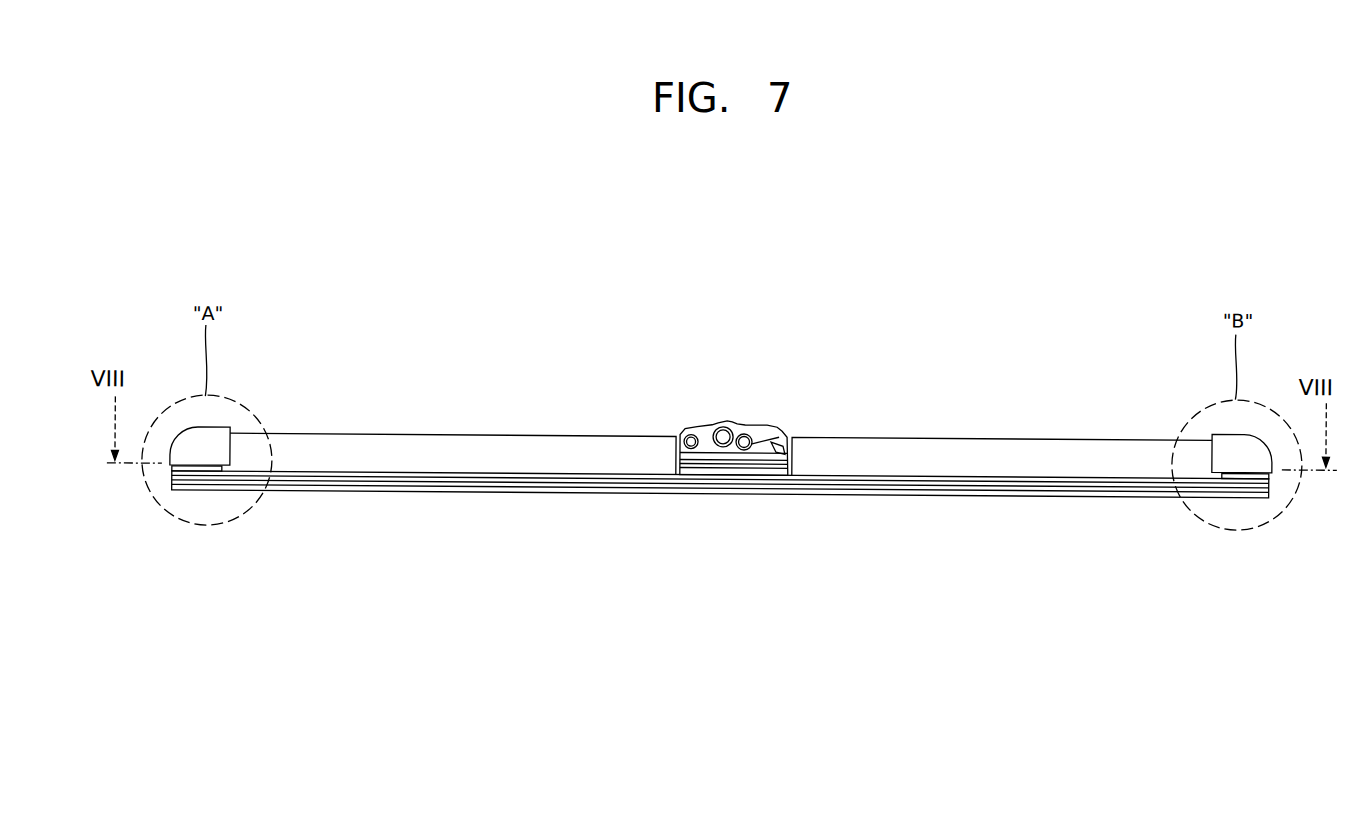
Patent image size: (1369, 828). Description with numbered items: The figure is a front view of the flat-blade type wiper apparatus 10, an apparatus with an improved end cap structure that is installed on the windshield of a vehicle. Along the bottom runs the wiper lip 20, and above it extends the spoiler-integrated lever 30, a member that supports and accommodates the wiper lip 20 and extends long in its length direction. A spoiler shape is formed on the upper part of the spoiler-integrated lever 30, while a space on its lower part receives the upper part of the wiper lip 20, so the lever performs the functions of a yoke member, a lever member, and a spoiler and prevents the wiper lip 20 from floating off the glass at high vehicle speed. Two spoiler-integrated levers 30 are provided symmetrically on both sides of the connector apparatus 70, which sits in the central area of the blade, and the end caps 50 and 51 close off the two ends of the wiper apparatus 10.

The flat-blade type wiper apparatus 10 is at (768, 334).
The wiper lip 20 is at (503, 491).
The spoiler-integrated lever 30 is at (499, 433).
The end cap 50 is at (210, 498).
The end cap 51 is at (1251, 497).
The connector apparatus 70 is at (788, 418).